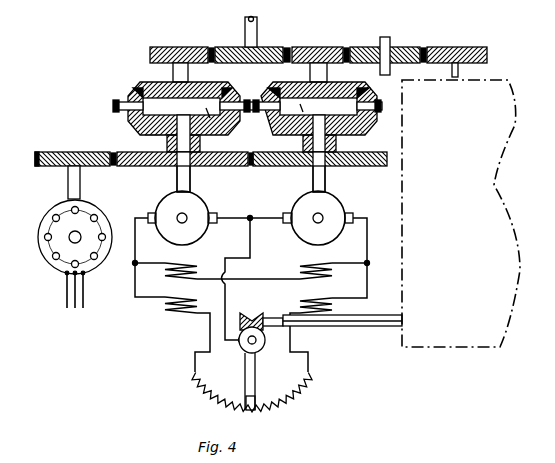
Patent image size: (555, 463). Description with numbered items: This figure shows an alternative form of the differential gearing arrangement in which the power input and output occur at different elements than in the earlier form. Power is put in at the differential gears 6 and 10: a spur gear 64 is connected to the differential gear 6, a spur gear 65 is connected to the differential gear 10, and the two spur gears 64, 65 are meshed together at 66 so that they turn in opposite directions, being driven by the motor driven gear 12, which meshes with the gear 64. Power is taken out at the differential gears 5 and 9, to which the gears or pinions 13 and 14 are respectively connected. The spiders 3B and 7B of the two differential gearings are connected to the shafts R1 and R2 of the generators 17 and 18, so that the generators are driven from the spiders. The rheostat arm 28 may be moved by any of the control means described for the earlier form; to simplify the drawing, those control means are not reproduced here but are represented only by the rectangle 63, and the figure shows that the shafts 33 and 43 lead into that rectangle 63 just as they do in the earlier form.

The gear or pinion 13 is at (168, 47).
The gear or pinion 14 is at (307, 48).
The shaft 43 is at (462, 72).
The differential gear 5 is at (148, 82).
The differential gear 6 is at (145, 137).
The spider 3B is at (212, 134).
The differential gear 9 is at (350, 82).
The spider 7B is at (300, 112).
The differential gear 10 is at (358, 134).
The motor driven gear 12 is at (80, 152).
The spur gear 64 is at (157, 166).
The meshing point 66 is at (252, 166).
The spur gear 65 is at (367, 166).
The shaft R1 is at (184, 182).
The shaft R2 is at (313, 179).
The generator 17 is at (199, 208).
The generator 18 is at (302, 204).
The rheostat arm 28 is at (259, 368).
The shaft 33 is at (363, 326).
The rectangle 63 is at (455, 347).